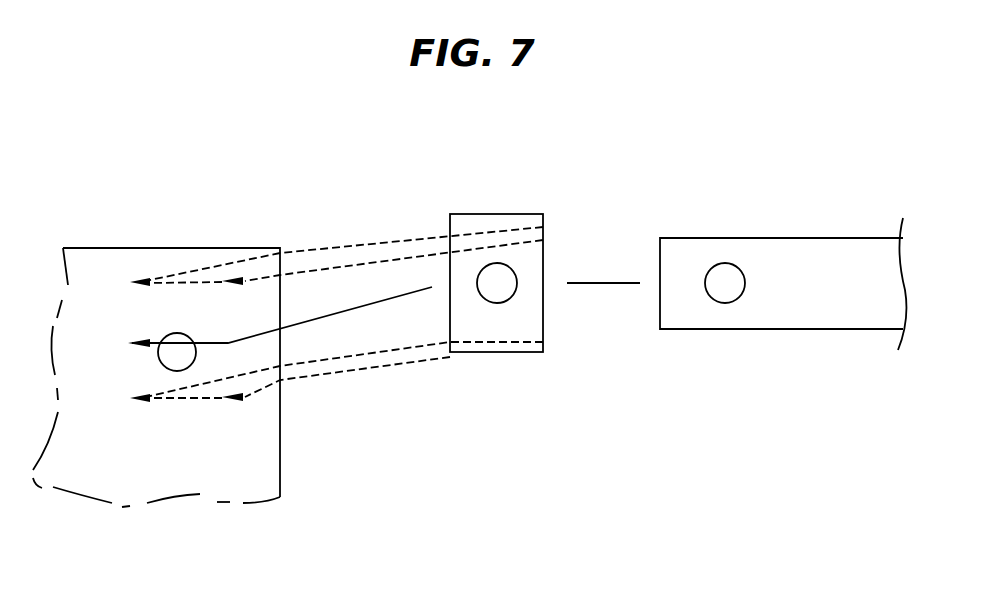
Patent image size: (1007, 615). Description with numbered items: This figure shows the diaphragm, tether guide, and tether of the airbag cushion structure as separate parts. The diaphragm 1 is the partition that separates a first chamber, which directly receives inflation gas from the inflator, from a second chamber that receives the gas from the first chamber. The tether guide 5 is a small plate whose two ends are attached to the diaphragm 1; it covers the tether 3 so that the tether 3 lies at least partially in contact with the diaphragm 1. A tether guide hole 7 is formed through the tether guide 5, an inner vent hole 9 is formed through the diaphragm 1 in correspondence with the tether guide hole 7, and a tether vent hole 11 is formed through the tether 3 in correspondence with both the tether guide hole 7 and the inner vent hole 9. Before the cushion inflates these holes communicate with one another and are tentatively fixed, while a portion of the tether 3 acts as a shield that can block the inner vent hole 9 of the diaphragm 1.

The diaphragm 1 is at (104, 283).
The tether 3 is at (826, 274).
The tether guide 5 is at (483, 250).
The tether guide hole 7 is at (507, 282).
The inner vent hole 9 is at (175, 357).
The tether vent hole 11 is at (728, 277).